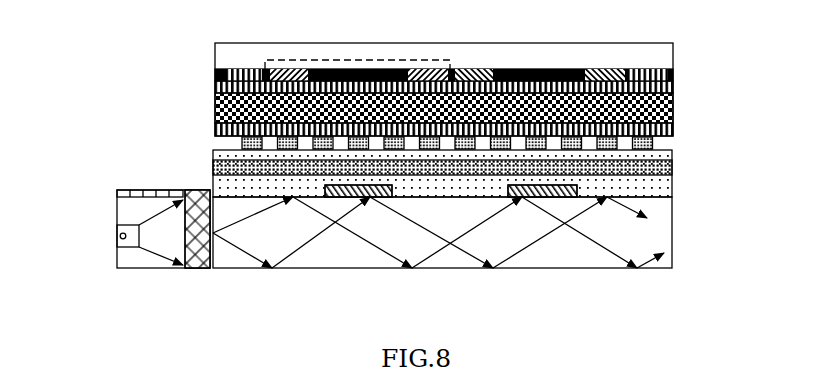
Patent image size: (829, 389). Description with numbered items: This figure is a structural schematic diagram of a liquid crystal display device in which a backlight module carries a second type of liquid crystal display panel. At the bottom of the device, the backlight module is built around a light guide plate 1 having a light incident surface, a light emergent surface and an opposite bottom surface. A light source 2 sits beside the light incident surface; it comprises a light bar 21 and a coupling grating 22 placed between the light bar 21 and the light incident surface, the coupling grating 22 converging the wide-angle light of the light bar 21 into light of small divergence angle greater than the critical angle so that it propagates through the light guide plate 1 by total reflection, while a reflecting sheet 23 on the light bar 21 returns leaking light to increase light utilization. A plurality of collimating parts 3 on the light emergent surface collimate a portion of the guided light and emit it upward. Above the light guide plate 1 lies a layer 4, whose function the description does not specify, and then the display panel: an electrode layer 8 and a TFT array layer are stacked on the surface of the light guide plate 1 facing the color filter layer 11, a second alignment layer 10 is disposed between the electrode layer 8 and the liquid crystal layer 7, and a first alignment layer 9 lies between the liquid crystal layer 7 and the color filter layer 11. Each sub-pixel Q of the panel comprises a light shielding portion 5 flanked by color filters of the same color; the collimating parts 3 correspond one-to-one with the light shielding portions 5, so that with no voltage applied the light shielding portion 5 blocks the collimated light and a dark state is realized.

The light guide plate 1 is at (672, 232).
The light source 2 is at (144, 191).
The light bar 21 is at (198, 150).
The coupling grating 22 is at (198, 190).
The reflecting sheet 23 is at (157, 190).
The collimating parts 3 is at (563, 198).
The optical adhesive layer 4 is at (672, 190).
The light shielding portion 5 is at (540, 70).
The liquid crystal layer 7 is at (674, 107).
The electrode layer 8 is at (673, 137).
The first alignment layer 9 is at (674, 85).
The second alignment layer 10 is at (674, 130).
The color filter layer 11 is at (674, 69).
The sub-pixel Q is at (376, 60).